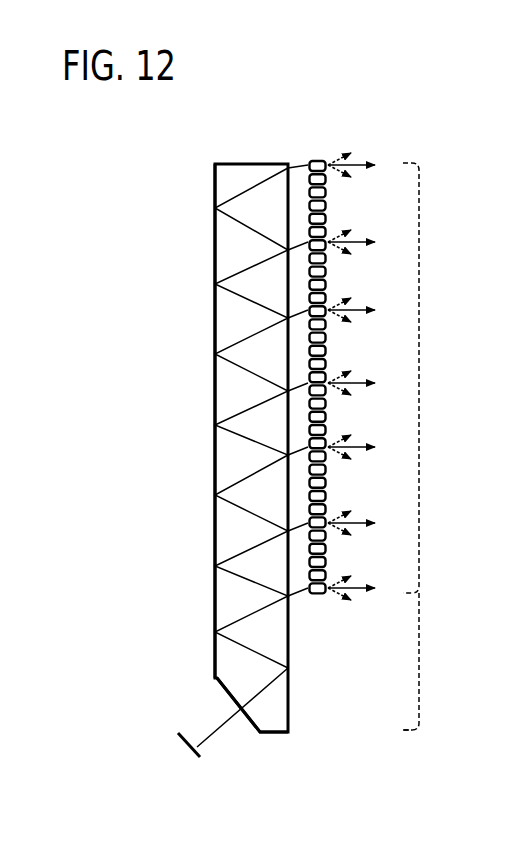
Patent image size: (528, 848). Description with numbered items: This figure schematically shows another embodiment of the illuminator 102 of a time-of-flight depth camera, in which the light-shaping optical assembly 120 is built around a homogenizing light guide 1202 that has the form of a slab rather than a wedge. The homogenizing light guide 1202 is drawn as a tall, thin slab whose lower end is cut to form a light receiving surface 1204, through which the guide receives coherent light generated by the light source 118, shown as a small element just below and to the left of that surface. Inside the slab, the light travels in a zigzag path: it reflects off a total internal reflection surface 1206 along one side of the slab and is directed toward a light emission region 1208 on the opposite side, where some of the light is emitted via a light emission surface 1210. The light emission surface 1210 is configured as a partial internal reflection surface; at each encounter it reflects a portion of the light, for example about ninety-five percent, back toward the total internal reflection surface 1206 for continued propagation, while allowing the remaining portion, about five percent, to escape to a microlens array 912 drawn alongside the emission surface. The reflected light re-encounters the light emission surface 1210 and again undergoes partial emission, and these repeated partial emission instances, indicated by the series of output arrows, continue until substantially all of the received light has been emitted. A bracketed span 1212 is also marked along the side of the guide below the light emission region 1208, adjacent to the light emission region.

The illuminator 102 is at (162, 155).
The light source 118 is at (200, 760).
The optical assembly 120 is at (369, 736).
The microlens array 912 is at (318, 598).
The homogenizing light guide 1202 is at (255, 163).
The light receiving surface 1204 is at (250, 724).
The total internal reflection surface 1206 is at (213, 256).
The light emission region 1208 is at (419, 383).
The light emission surface 1210 is at (294, 168).
The non-output region 1212 is at (419, 658).